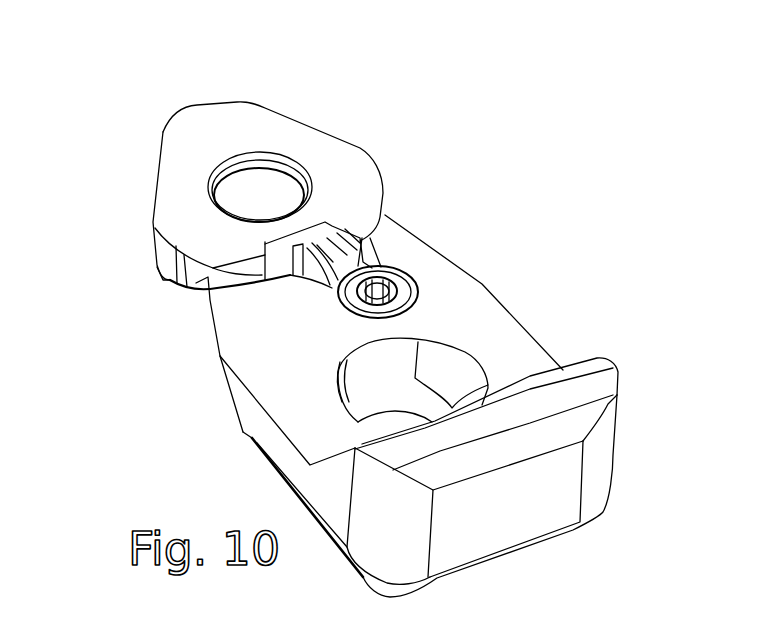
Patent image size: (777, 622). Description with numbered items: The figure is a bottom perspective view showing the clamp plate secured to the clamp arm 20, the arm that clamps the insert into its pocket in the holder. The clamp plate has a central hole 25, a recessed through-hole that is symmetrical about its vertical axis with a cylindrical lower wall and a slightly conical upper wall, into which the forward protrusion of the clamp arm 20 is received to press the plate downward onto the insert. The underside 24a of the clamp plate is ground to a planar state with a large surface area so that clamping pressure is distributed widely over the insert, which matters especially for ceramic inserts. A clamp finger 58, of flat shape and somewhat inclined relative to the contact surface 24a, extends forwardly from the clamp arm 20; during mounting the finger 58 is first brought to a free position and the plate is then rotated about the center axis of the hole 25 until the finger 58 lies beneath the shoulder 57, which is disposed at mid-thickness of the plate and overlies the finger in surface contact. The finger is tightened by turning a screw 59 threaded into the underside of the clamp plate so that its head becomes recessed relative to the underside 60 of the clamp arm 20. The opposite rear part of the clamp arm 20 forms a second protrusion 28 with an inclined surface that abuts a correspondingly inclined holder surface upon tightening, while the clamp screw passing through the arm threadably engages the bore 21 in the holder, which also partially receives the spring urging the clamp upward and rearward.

The clamp arm 20 is at (208, 403).
The bore 21 is at (393, 385).
The underside of clamp plate 24a is at (167, 177).
The central hole 25 is at (248, 185).
The second protrusion 28 is at (618, 370).
The shoulder 57 is at (215, 270).
The clamp finger 58 is at (331, 243).
The screw 59 is at (387, 272).
The underside of clamp arm 60 is at (443, 293).